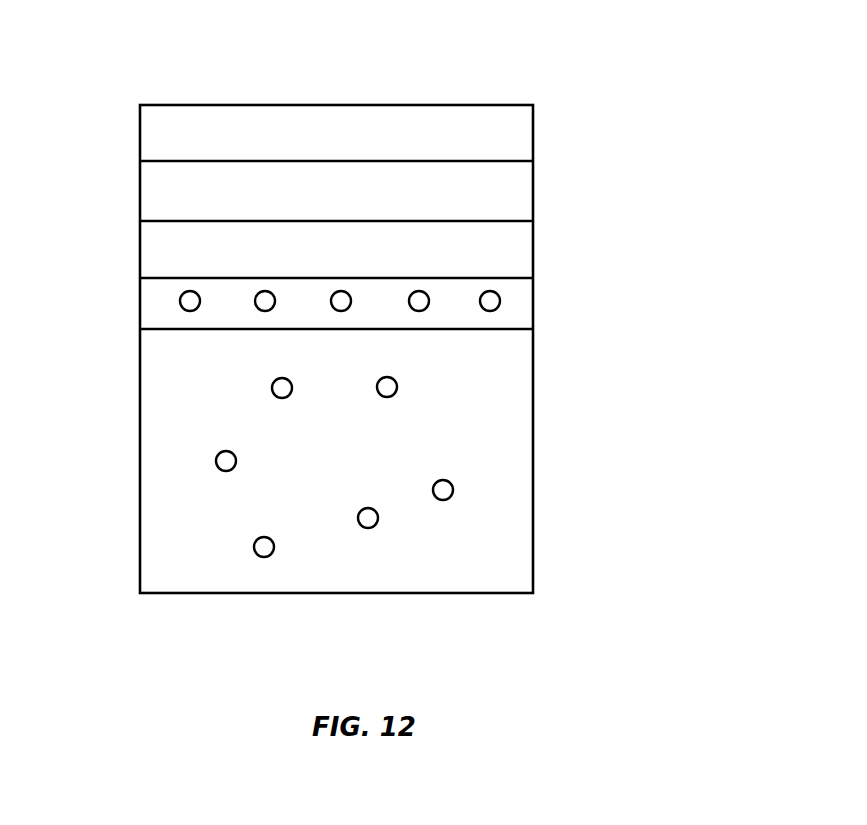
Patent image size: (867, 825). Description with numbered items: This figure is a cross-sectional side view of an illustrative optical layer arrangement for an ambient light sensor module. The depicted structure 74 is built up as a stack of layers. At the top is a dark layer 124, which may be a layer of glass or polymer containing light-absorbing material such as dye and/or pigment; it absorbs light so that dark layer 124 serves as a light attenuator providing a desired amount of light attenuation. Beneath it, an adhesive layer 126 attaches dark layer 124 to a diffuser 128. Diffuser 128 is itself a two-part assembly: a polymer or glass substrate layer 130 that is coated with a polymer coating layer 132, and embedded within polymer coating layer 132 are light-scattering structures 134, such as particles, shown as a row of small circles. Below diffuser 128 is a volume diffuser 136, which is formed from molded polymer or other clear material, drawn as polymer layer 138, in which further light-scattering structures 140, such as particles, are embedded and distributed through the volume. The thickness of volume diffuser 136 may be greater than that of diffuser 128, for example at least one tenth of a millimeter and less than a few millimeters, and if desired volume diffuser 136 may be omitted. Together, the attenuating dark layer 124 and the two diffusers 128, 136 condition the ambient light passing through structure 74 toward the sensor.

The structure 74 is at (510, 63).
The dark layer 124 is at (523, 134).
The adhesive layer 126 is at (523, 190).
The diffuser 128 is at (123, 222).
The substrate layer 130 is at (523, 249).
The polymer coating layer 132 is at (523, 305).
The light-scattering structures 134 is at (262, 311).
The volume diffuser 136 is at (553, 330).
The polymer layer 138 is at (470, 583).
The light-scattering structures 140 is at (366, 528).